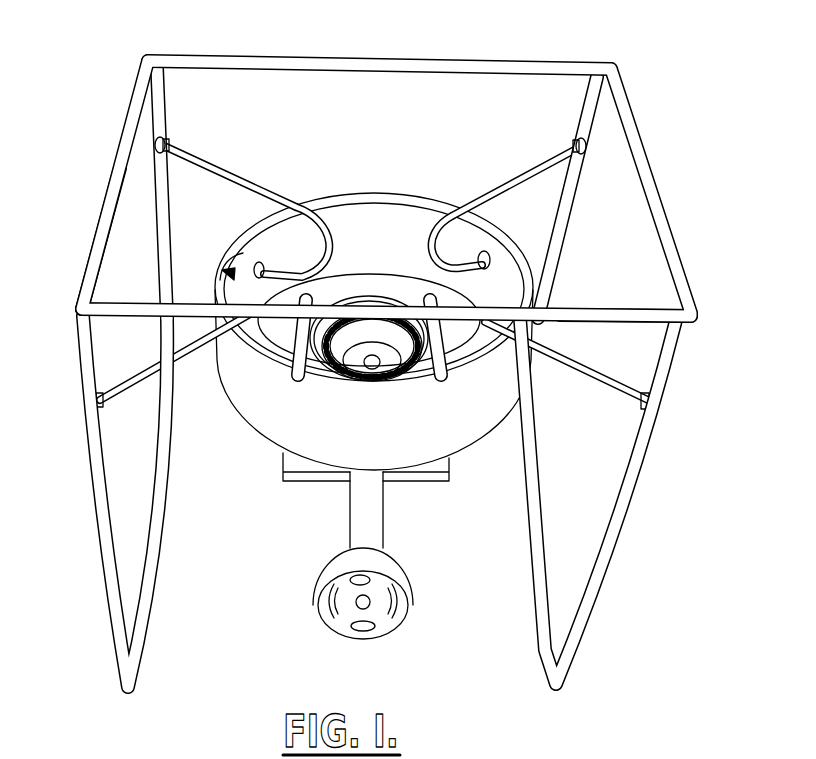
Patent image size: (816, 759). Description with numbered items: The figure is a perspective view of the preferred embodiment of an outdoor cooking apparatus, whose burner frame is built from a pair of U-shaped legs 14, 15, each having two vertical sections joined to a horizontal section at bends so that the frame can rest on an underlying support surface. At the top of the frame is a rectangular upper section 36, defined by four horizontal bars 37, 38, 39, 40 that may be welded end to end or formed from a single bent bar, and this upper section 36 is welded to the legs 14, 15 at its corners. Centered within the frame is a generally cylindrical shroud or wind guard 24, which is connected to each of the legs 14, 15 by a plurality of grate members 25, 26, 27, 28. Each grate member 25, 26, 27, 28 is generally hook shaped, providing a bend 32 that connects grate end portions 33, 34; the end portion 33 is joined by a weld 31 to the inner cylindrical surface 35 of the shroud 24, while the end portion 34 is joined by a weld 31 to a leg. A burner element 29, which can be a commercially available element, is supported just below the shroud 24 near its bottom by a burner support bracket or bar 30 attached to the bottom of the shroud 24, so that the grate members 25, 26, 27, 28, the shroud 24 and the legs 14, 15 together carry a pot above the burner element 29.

The leg 14 is at (113, 592).
The leg 15 is at (542, 605).
The shroud or wind guard 24 is at (392, 435).
The grate member 25 is at (157, 363).
The grate member 26 is at (237, 182).
The grate member 27 is at (534, 173).
The grate member 28 is at (613, 390).
The burner element 29 is at (362, 292).
The burner support bracket or bar 30 is at (278, 477).
The weld 31 is at (164, 135).
The bend 32 is at (336, 214).
The grate end portion 33 is at (258, 262).
The grate end portion 34 is at (167, 140).
The inner cylindrical surface 35 is at (217, 252).
The rectangular upper section 36 is at (128, 118).
The horizontal bar 37 is at (104, 212).
The horizontal bar 38 is at (372, 60).
The horizontal bar 39 is at (673, 243).
The horizontal bar 40 is at (648, 285).